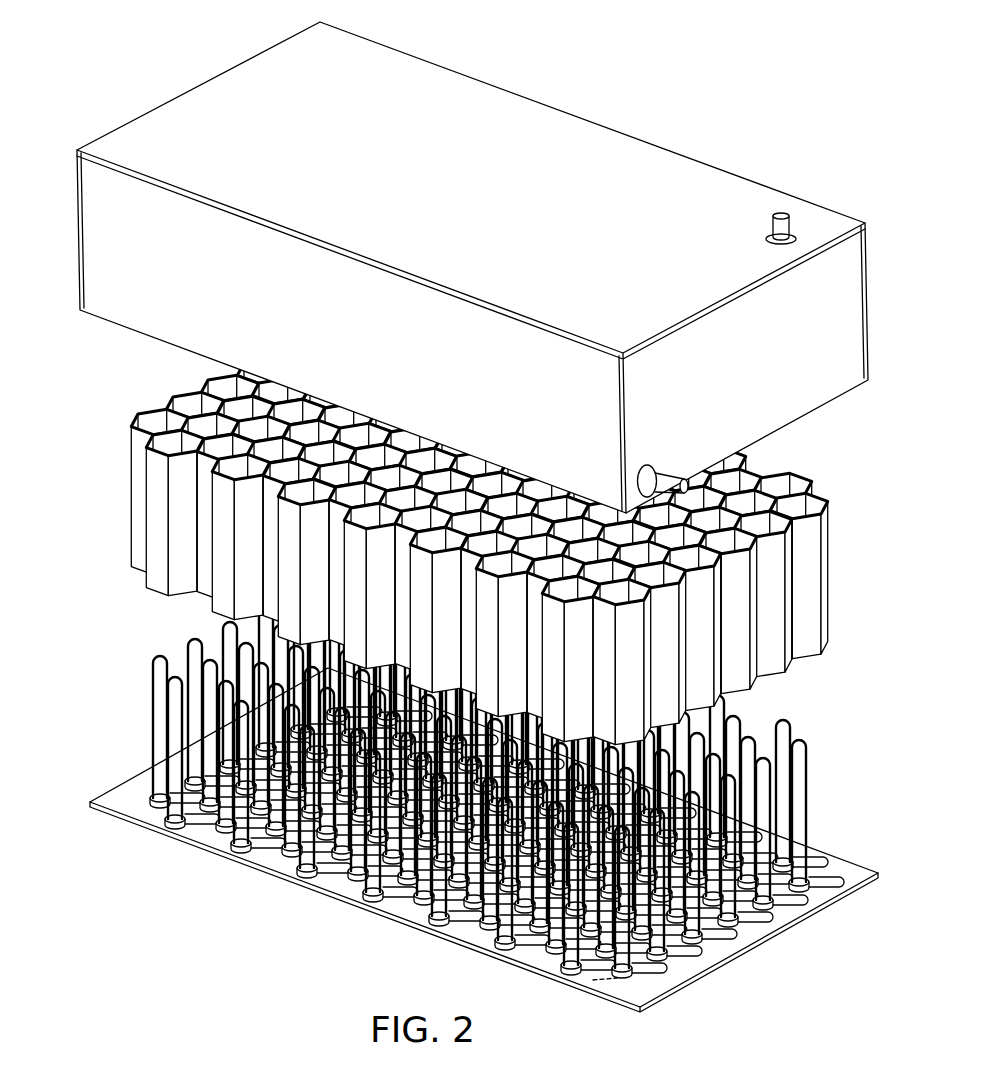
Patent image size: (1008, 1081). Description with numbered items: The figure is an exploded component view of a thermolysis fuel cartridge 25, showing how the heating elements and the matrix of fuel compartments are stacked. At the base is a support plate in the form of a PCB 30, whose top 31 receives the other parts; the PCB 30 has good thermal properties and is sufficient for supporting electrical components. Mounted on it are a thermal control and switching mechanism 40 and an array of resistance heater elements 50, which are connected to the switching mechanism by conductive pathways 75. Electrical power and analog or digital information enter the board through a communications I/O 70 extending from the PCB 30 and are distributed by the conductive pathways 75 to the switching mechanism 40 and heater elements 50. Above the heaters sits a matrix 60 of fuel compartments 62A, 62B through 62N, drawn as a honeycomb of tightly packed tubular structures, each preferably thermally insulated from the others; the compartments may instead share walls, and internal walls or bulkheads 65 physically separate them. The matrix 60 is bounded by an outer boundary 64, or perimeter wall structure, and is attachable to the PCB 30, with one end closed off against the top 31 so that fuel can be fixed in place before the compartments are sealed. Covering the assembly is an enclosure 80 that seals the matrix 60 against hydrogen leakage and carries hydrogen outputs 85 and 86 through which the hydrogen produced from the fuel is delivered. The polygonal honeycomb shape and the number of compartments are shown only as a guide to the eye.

The fuel cartridge 25 is at (459, 266).
The PCB 30 is at (461, 840).
The top 31 is at (118, 806).
The thermal control and switching mechanism 40 is at (813, 868).
The resistance heater elements 50 is at (507, 774).
The matrix 60 is at (484, 533).
The fuel compartment 62A is at (829, 565).
The fuel compartment 62B is at (748, 497).
The fuel compartment 62N is at (160, 422).
The outer boundary 64 is at (178, 623).
The bulkhead 65 is at (805, 509).
The communications I/O 70 is at (593, 980).
The conductive pathways 75 is at (734, 934).
The enclosure 80 is at (137, 286).
The hydrogen output 85 is at (660, 483).
The hydrogen output 86 is at (790, 230).